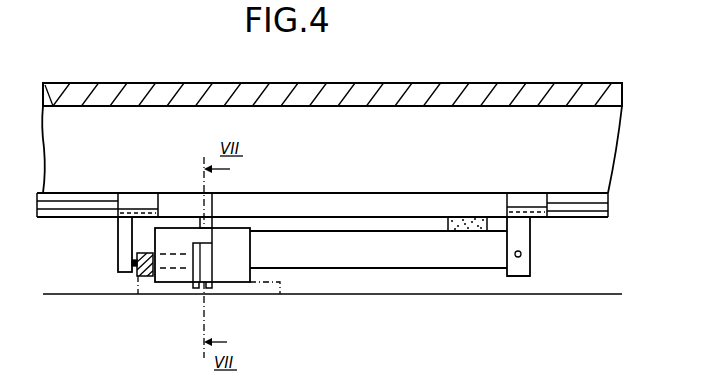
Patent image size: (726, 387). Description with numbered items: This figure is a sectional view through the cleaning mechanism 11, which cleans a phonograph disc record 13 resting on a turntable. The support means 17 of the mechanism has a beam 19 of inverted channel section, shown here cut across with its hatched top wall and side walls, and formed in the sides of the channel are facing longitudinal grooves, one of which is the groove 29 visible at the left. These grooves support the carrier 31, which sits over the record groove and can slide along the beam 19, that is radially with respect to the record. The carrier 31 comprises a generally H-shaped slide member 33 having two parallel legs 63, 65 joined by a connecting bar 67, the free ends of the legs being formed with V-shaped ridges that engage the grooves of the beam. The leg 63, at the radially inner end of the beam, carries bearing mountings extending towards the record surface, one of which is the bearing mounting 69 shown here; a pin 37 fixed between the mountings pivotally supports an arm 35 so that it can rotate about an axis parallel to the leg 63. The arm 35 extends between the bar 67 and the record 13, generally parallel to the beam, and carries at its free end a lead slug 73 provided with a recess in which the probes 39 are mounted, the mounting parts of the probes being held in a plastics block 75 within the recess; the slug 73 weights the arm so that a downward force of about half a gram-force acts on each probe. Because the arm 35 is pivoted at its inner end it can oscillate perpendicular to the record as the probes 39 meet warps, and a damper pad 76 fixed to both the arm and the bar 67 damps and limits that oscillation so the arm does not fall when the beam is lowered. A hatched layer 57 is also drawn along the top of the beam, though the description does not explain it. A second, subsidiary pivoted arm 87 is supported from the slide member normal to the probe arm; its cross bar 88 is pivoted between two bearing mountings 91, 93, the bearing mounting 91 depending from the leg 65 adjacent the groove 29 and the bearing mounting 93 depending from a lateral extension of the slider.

The cleaning mechanism 11 is at (519, 67).
The phonograph disc record 13 is at (592, 292).
The support means 17 is at (120, 74).
The beam 19 is at (212, 83).
The groove 29 is at (68, 200).
The carrier 31 is at (542, 249).
The slide member 33 is at (406, 200).
The arm 35 is at (383, 266).
The pin 37 is at (522, 257).
The probes 39 is at (206, 290).
The insulating layer 57 is at (343, 83).
The leg 63 is at (524, 200).
The leg 65 is at (137, 193).
The connecting bar 67 is at (314, 200).
The bearing mounting 69 is at (516, 278).
The lead slug 73 is at (243, 262).
The plastics block 75 is at (192, 262).
The damper pad 76 is at (467, 226).
The subsidiary pivoted arm 87 is at (137, 277).
The cross bar 88 is at (160, 284).
The bearing mounting 91 is at (122, 247).
The bearing mounting 93 is at (214, 219).